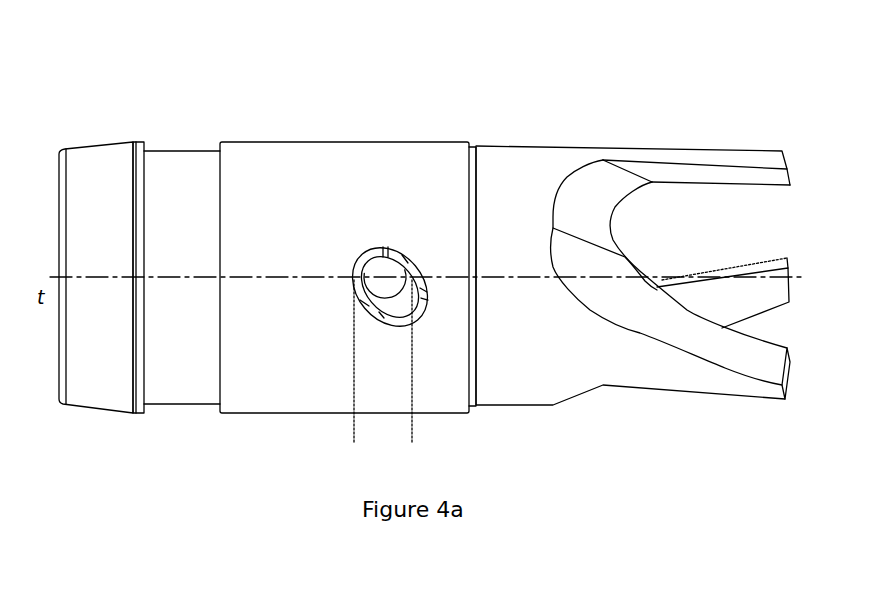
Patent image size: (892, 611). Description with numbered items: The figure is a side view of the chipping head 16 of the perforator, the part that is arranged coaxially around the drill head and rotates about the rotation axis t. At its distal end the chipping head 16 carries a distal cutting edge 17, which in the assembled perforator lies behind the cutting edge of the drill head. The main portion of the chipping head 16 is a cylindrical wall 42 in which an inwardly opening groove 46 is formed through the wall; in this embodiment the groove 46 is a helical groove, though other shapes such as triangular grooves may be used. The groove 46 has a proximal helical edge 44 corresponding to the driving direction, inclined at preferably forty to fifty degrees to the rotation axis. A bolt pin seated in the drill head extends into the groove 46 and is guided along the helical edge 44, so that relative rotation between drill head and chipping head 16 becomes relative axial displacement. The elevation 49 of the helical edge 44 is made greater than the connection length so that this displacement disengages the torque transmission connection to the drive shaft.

The chipping head 16 is at (461, 86).
The distal cutting edge 17 is at (652, 323).
The cylindrical wall 42 is at (305, 170).
The proximal helical edge 44 is at (372, 302).
The groove 46 is at (390, 268).
The elevation 49 is at (412, 437).